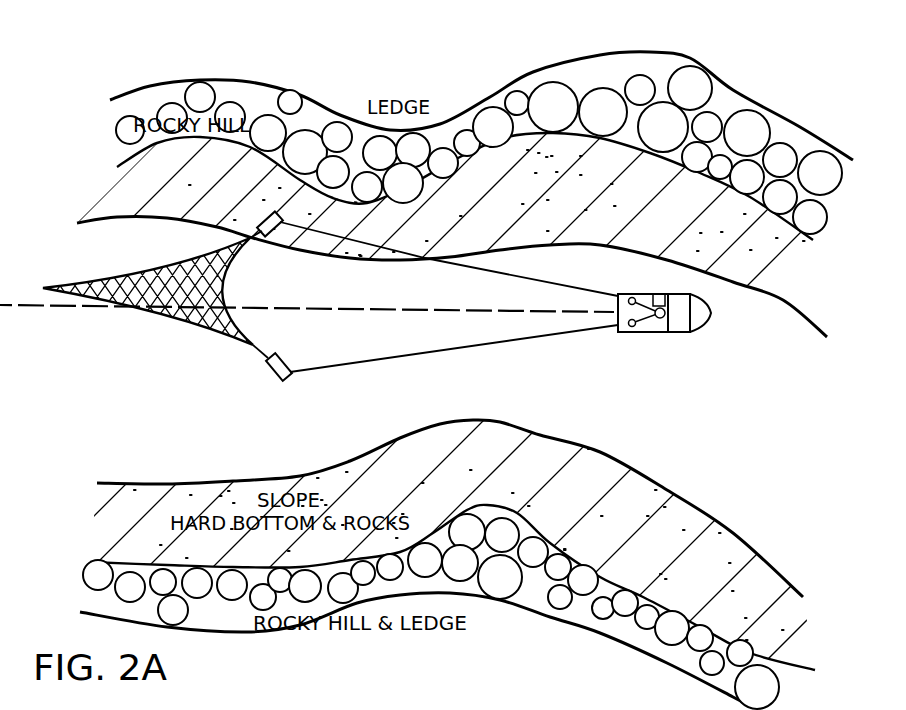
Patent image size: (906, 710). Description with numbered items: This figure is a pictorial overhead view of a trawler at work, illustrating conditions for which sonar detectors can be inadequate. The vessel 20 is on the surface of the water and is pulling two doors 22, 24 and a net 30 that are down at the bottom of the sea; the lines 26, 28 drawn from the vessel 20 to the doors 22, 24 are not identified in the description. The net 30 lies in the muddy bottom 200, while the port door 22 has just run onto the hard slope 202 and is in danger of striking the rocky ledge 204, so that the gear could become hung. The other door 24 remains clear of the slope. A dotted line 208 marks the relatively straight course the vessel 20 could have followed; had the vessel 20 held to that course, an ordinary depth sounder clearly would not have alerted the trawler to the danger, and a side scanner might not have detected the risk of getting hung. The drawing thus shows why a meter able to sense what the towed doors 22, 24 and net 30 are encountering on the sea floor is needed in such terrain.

The vessel 20 is at (658, 333).
The port door 22 is at (278, 237).
The door 24 is at (266, 369).
The port towing cable 26 is at (585, 289).
The starboard towing cable 28 is at (537, 337).
The net 30 is at (149, 313).
The muddy bottom 200 is at (724, 391).
The hard slope 202 is at (163, 220).
The rocky ledge 204 is at (640, 75).
The dotted line 208 is at (32, 305).